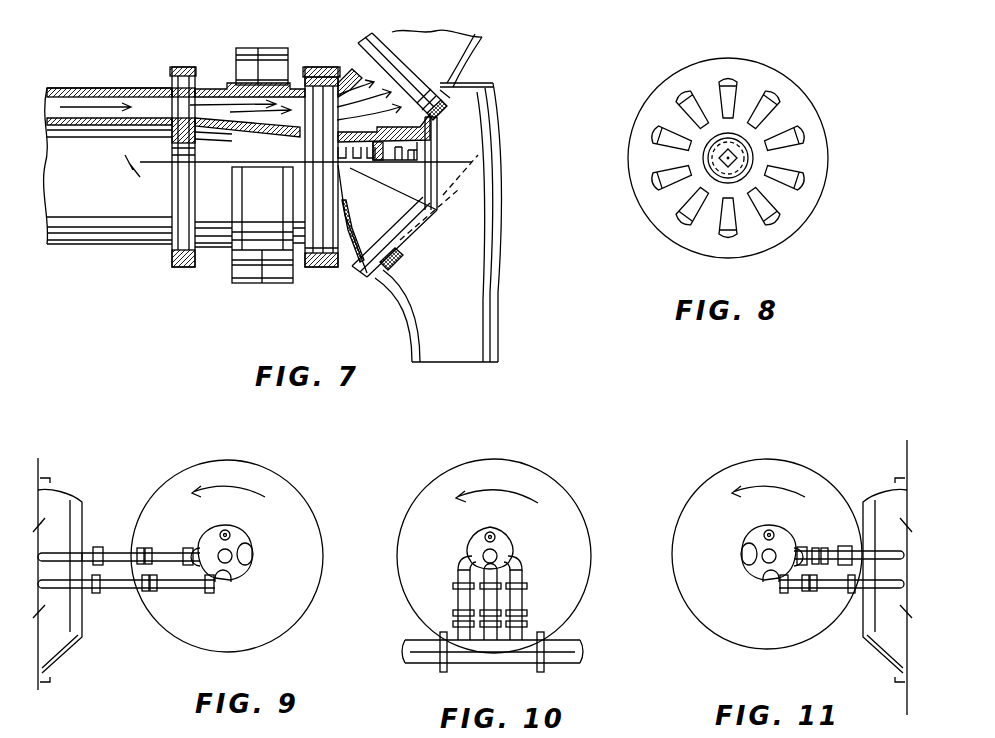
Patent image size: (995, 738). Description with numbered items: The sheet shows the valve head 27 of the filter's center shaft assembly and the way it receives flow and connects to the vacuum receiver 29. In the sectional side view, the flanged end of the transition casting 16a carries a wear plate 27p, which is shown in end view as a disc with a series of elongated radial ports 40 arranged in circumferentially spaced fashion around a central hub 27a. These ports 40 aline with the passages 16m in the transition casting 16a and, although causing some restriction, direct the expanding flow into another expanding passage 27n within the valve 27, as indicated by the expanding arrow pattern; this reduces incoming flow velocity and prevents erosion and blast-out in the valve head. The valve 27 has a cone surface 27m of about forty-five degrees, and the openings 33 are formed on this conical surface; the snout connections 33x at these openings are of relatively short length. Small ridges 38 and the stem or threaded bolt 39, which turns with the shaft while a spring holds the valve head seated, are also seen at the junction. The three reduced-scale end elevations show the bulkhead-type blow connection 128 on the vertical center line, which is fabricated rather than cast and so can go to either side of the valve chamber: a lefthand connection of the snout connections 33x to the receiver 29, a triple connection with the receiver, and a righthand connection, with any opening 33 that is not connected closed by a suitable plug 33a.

In FIG. 7, the transition casting 16a is at (218, 126).
In FIG. 7, the passages 16m is at (270, 174).
In FIG. 7, the valve head 27 is at (357, 274).
In FIG. 9, the valve head 27 is at (240, 575).
In FIG. 10, the valve head 27 is at (505, 540).
In FIG. 11, the valve head 27 is at (748, 572).
In FIG. 8, the rotor disc 27a is at (684, 80).
In FIG. 7, the cone surface 27m is at (338, 62).
In FIG. 7, the expanding passage 27n is at (440, 93).
In FIG. 7, the wear plate 27p is at (312, 67).
In FIG. 9, the vacuum receiver 29 is at (77, 492).
In FIG. 11, the vacuum receiver 29 is at (878, 492).
In FIG. 7, the openings 33 is at (445, 97).
In FIG. 9, the plug 33a is at (249, 556).
In FIG. 11, the plug 33a is at (744, 556).
In FIG. 7, the snout connections 33x is at (448, 64).
In FIG. 9, the snout connections 33x is at (226, 585).
In FIG. 10, the snout connections 33x is at (460, 557).
In FIG. 11, the snout connections 33x is at (769, 585).
In FIG. 7, the seal ridges 38 is at (355, 160).
In FIG. 7, the stem or threaded bolt 39 is at (417, 160).
In FIG. 8, the elongated radial ports 40 is at (662, 172).
In FIG. 9, the blow connection 128 is at (226, 540).
In FIG. 10, the blow connection 128 is at (482, 535).
In FIG. 11, the blow connection 128 is at (776, 540).